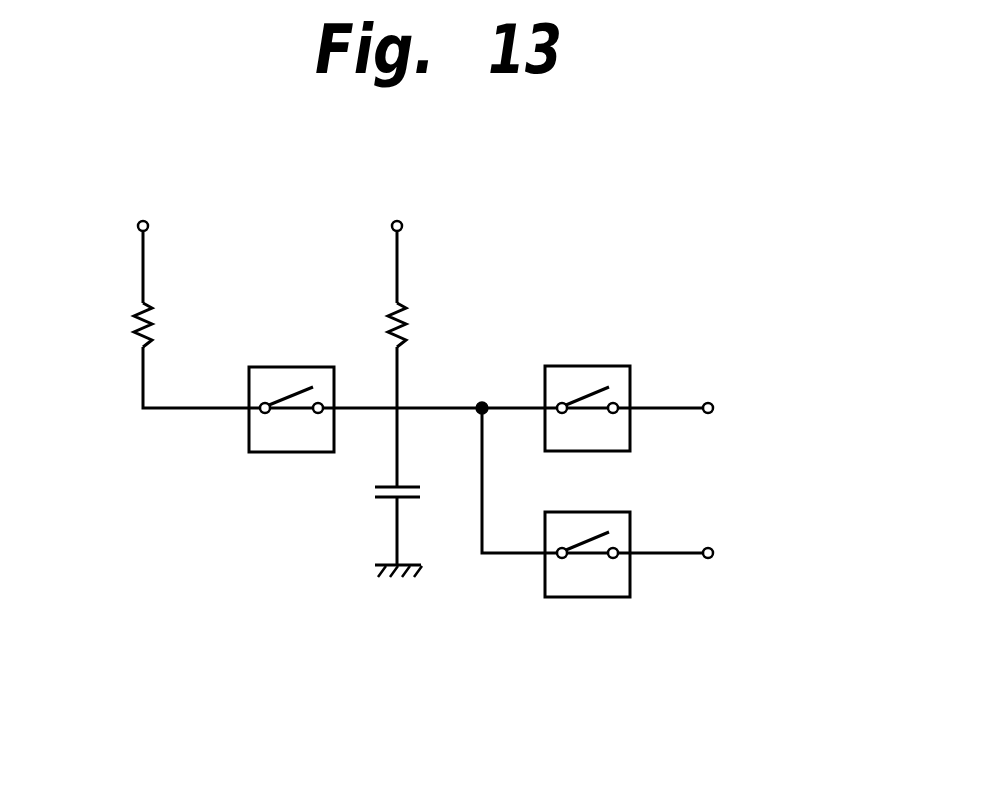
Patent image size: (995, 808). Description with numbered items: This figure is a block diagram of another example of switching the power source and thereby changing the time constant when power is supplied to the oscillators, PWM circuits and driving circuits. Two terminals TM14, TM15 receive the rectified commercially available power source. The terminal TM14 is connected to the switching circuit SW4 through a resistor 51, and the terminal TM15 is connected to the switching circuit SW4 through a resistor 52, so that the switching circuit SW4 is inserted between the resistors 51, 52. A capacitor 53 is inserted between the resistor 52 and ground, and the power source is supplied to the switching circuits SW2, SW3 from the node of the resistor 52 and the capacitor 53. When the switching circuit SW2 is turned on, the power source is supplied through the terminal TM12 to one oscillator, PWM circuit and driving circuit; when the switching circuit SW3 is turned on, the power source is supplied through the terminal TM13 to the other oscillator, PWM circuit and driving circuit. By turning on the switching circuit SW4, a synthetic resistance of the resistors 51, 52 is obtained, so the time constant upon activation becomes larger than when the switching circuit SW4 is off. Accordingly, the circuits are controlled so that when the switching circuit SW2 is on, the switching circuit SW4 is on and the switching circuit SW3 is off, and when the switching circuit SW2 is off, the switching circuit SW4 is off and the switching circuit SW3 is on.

The terminal TM14 is at (146, 216).
The terminal TM15 is at (400, 216).
The terminal TM12 is at (715, 407).
The terminal TM13 is at (715, 552).
The resistor 51 is at (120, 326).
The resistor 52 is at (420, 327).
The capacitor 53 is at (374, 495).
The switching circuit SW4 is at (290, 365).
The switching circuit SW2 is at (586, 365).
The switching circuit SW3 is at (590, 598).